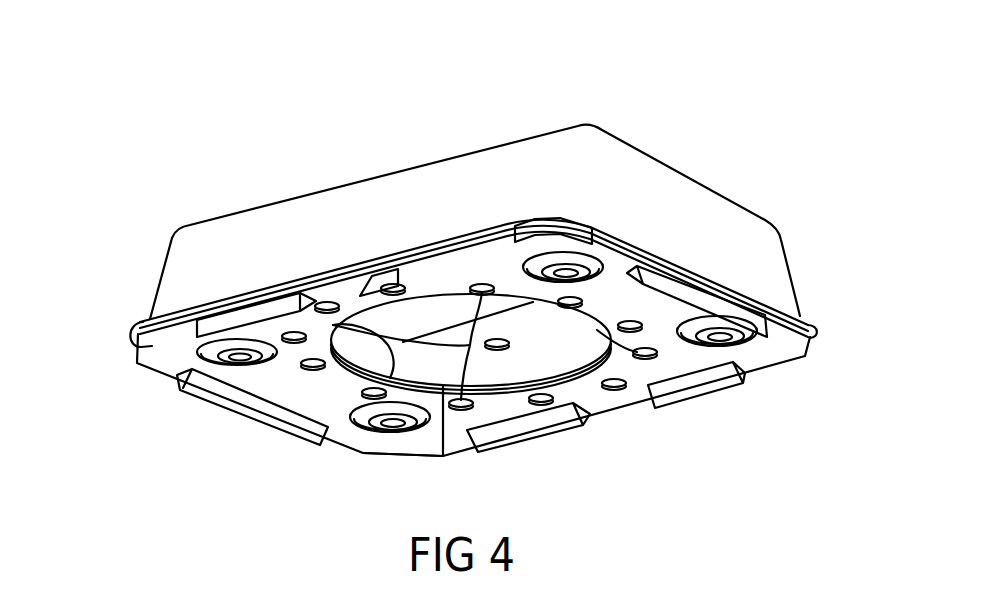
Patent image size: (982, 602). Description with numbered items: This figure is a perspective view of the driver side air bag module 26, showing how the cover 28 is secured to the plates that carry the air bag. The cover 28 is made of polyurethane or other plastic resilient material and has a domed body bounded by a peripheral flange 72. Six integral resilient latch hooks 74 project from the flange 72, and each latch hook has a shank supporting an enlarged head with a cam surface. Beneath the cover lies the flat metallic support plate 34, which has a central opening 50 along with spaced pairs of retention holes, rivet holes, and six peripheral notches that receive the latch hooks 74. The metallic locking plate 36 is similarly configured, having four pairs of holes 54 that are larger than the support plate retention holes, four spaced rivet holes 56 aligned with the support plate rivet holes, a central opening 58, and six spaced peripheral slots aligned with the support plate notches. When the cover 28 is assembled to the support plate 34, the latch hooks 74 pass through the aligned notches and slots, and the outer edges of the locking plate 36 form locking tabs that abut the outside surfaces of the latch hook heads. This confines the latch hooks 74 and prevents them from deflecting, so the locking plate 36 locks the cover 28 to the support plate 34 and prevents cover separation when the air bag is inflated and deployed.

The driver side air bag module 26 is at (703, 163).
The cover 28 is at (221, 224).
The support plate 34 is at (200, 348).
The locking plate 36 is at (142, 347).
The central opening 50 is at (455, 446).
The holes 54 is at (393, 293).
The rivet holes 56 is at (470, 346).
The central opening 58 is at (443, 440).
The peripheral flange 72 is at (550, 228).
The latch hooks 74 is at (292, 297).